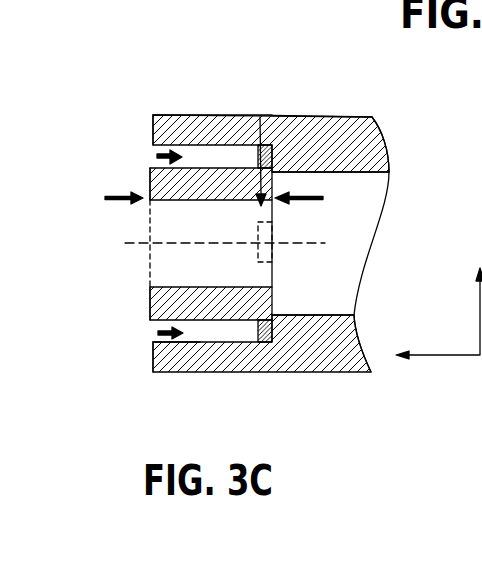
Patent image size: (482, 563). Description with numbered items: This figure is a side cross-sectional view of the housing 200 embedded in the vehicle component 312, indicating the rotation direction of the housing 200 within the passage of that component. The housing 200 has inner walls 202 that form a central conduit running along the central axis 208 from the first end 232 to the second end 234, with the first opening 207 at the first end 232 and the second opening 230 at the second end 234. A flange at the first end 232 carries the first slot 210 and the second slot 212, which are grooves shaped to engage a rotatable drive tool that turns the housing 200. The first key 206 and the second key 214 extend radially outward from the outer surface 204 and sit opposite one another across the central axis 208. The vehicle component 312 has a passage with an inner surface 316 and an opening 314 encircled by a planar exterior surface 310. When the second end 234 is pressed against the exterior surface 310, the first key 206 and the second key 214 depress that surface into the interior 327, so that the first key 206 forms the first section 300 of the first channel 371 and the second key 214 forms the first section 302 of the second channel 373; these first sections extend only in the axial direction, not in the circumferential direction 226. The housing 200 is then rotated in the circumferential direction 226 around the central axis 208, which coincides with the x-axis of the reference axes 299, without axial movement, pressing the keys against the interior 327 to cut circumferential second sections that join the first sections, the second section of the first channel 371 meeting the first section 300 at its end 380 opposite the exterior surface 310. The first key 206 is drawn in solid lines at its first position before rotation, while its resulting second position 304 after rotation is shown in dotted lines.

The housing 200 is at (122, 165).
The inner walls 202 is at (216, 200).
The outer surface 204 is at (202, 163).
The first key 206 is at (260, 117).
The first opening 207 is at (148, 263).
The central axis 208 is at (129, 242).
The first slot 210 is at (150, 190).
The second slot 212 is at (150, 307).
The second key 214 is at (266, 332).
The circumferential direction 226 is at (321, 117).
The second opening 230 is at (273, 222).
The first end 232 is at (106, 197).
The second end 234 is at (318, 202).
The reference axes 299 is at (452, 318).
The first section of first channel 300 is at (185, 115).
The first section of second channel 302 is at (192, 343).
The second position 304 is at (273, 256).
The exterior surface 310 is at (153, 116).
The vehicle component 312 is at (348, 115).
The opening 314 is at (152, 343).
The inner surface 316 is at (319, 173).
The interior 327 is at (360, 160).
The first channel 371 is at (157, 155).
The second channel 373 is at (158, 333).
The end of first section 380 is at (308, 172).